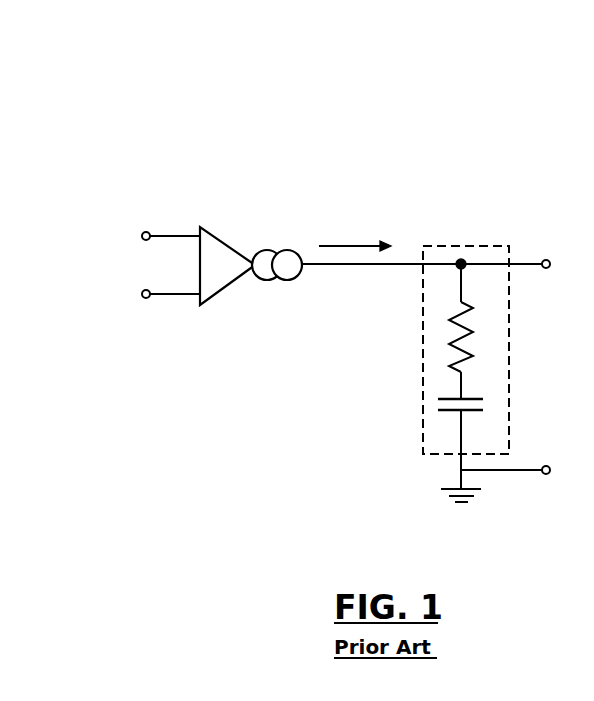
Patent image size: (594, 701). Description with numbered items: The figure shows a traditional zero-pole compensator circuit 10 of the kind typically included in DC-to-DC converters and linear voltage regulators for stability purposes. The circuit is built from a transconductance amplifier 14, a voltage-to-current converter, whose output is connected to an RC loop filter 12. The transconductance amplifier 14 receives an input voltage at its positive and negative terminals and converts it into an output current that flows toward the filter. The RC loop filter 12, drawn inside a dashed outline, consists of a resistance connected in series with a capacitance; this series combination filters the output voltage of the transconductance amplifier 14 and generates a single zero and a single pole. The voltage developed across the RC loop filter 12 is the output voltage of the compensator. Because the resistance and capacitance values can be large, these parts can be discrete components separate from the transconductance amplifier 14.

The zero-pole compensator circuit 10 is at (158, 139).
The RC loop filter 12 is at (442, 243).
The transconductance amplifier 14 is at (230, 233).